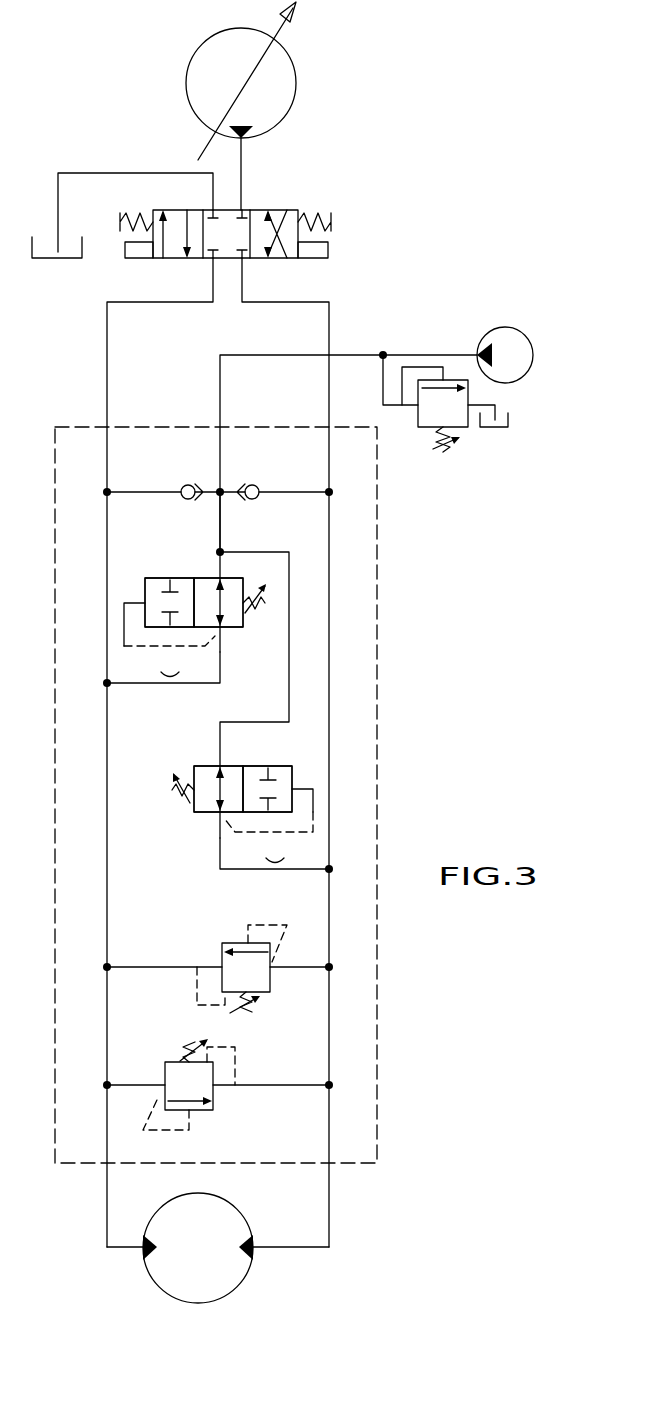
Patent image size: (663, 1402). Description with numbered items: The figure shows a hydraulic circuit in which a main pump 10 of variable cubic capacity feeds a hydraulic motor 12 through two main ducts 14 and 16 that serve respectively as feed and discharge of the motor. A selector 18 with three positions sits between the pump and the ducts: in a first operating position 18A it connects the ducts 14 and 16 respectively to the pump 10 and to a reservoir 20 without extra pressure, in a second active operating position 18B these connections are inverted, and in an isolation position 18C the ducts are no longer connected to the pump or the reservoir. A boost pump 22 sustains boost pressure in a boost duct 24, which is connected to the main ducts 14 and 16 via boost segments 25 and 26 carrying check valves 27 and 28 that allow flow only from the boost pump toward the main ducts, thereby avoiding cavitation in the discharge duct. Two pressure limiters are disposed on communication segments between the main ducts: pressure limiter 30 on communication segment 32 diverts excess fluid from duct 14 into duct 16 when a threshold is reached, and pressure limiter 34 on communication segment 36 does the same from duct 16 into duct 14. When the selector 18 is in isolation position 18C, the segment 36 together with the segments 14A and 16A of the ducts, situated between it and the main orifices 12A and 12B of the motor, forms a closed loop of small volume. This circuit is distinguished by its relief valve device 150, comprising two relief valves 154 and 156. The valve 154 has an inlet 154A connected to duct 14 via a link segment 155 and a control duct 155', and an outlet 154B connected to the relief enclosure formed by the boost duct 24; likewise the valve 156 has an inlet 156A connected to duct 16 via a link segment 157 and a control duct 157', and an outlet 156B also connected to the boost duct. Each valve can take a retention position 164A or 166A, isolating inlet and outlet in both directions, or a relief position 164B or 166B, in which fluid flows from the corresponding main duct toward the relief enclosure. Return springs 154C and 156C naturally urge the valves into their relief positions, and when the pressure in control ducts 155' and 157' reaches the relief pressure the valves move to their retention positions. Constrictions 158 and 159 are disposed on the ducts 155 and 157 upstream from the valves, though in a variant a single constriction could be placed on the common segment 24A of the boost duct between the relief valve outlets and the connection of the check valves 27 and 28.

The main pump 10 is at (297, 80).
The hydraulic motor 12 is at (225, 1198).
The main orifice of the motor 12A is at (143, 1250).
The main orifice of the motor 12B is at (255, 1250).
The main duct 14 is at (107, 695).
The segment of duct 14 14A is at (107, 1200).
The main duct 16 is at (330, 712).
The segment of duct 16 16A is at (331, 1200).
The selector 18 is at (301, 188).
The first operating position 18A is at (265, 258).
The second active operating position 18B is at (193, 258).
The isolation position 18C is at (225, 258).
The reservoir 20 is at (58, 258).
The boost pump 22 is at (505, 327).
The boost duct 24 is at (285, 355).
The segment of the boost duct 24A is at (222, 523).
The boost segment 25 is at (145, 490).
The boost segment 26 is at (286, 490).
The check valve 27 is at (184, 485).
The check valve 28 is at (252, 485).
The pressure limiter 30 is at (165, 1066).
The communication segment 32 is at (270, 1087).
The pressure limiter 34 is at (272, 978).
The communication segment 36 is at (162, 968).
The relief valve device 150 is at (323, 668).
The relief valve 154 is at (152, 578).
The inlet 154A is at (222, 630).
The outlet 154B is at (218, 578).
The return spring 154C is at (265, 603).
The link segment 155 is at (163, 690).
The control duct 155' is at (139, 624).
The relief valve 156 is at (243, 755).
The inlet 156A is at (222, 814).
The outlet 156B is at (218, 766).
The return spring 156C is at (173, 792).
The link segment 157 is at (274, 874).
The control duct 157' is at (298, 816).
The constriction 158 is at (175, 688).
The constriction 159 is at (275, 873).
The retention position 164A is at (145, 586).
The relief position 164B is at (245, 580).
The retention position 166A is at (300, 755).
The relief position 166B is at (194, 812).